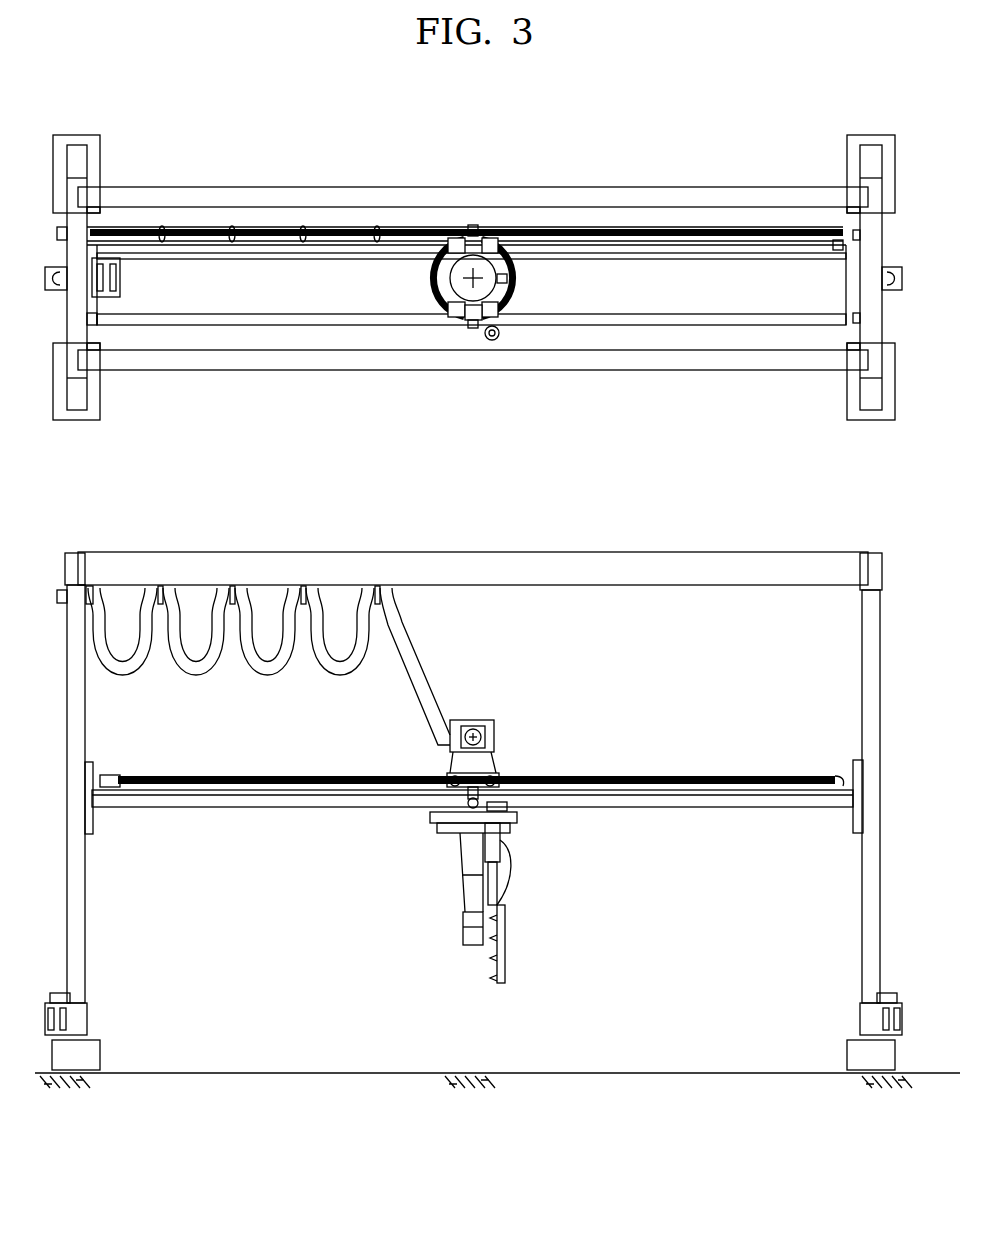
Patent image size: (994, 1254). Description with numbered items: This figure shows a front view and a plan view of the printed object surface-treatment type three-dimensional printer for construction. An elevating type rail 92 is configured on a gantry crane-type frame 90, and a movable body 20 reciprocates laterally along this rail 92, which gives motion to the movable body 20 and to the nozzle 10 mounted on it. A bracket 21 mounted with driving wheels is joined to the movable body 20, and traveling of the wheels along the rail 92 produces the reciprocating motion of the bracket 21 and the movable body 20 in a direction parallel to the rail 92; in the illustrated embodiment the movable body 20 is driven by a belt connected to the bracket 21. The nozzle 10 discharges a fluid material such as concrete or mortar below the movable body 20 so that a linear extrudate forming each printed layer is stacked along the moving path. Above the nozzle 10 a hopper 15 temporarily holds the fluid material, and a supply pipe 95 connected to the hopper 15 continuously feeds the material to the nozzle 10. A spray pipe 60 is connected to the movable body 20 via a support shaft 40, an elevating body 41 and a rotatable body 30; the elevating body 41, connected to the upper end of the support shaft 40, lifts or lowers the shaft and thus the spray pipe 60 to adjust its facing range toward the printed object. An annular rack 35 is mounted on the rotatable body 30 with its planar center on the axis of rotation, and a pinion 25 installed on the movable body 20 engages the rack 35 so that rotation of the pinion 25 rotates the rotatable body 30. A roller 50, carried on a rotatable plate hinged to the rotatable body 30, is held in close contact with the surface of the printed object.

The nozzle 10 is at (464, 935).
The hopper 15 is at (492, 288).
The movable body 20 is at (440, 283).
The bracket 21 is at (450, 772).
The pinion 25 is at (515, 278).
The rotatable body 30 is at (430, 817).
The annular rack 35 is at (498, 246).
The support shaft 40 is at (502, 891).
The elevating body 41 is at (498, 842).
The roller 50 is at (499, 778).
The spray pipe 60 is at (504, 940).
The gantry crane-type frame 90 is at (742, 384).
The elevating type rail 92 is at (362, 325).
The supply pipe 95 is at (370, 232).